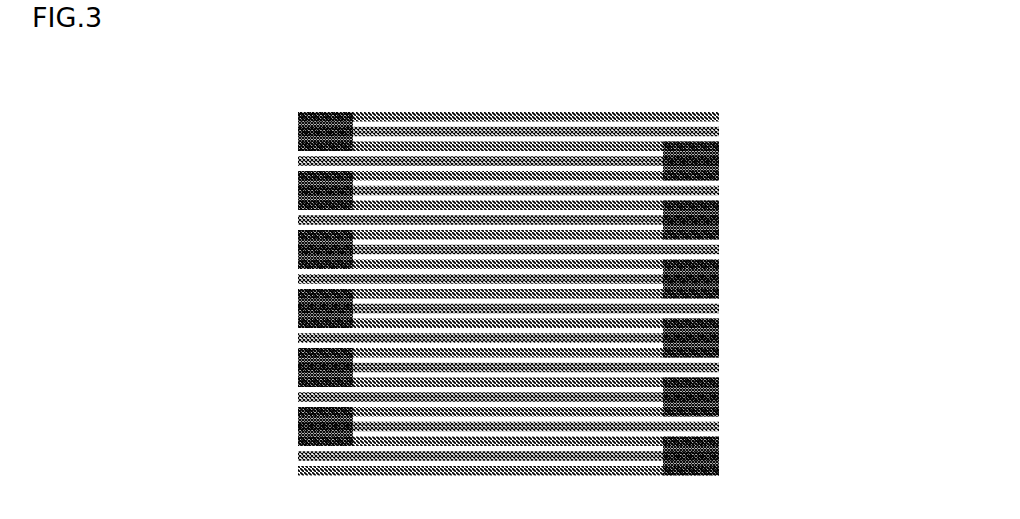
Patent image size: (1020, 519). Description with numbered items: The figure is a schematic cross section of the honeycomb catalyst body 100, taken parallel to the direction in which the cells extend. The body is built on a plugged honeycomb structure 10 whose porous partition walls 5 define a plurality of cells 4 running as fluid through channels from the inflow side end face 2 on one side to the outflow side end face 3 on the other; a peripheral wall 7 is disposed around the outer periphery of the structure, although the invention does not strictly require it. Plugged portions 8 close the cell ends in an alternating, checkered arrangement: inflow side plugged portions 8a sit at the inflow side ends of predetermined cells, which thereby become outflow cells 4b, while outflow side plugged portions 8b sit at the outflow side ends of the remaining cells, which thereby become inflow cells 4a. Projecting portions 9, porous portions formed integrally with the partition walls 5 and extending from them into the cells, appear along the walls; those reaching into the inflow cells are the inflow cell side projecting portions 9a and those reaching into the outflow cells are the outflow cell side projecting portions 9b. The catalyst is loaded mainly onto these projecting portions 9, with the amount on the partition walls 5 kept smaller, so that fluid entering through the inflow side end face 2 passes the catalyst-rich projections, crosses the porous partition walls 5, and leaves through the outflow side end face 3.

The honeycomb catalyst body 100 is at (772, 53).
The plugged honeycomb structure 10 is at (617, 108).
The peripheral wall 7 is at (523, 112).
The cell 4 is at (505, 160).
The inflow cell 4a is at (327, 154).
The outflow cell 4b is at (692, 183).
The projecting portion 9 is at (495, 284).
The inflow cell side projecting portion 9a is at (692, 338).
The outflow cell side projecting portion 9b is at (298, 249).
The plugged portion 8 is at (544, 319).
The inflow side plugged portion 8a is at (298, 360).
The outflow side plugged portion 8b is at (692, 271).
The inflow side end face 2 is at (297, 292).
The partition wall 5 is at (692, 380).
The outflow side end face 3 is at (692, 425).